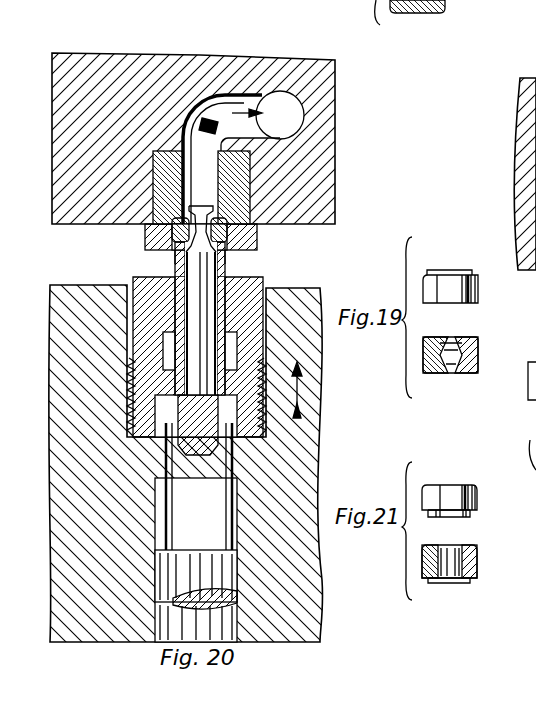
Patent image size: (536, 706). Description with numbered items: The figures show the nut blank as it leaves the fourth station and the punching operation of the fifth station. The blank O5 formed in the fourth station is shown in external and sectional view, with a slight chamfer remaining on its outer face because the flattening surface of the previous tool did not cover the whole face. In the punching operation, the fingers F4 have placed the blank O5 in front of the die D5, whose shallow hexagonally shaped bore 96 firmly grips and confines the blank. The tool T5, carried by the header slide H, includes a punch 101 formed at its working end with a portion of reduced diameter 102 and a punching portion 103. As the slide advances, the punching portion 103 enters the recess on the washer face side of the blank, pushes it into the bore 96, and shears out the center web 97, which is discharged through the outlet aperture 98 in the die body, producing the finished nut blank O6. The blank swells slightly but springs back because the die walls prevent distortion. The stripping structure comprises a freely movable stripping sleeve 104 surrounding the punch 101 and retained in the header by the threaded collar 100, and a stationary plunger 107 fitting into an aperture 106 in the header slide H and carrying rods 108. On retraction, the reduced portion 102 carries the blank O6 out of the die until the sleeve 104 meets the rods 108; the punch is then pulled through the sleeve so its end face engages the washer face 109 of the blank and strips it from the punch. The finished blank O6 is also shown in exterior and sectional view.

In FIG. 20, the header slide H is at (300, 454).
In FIG. 20, the center web 97 is at (190, 119).
In FIG. 20, the outlet aperture 98 is at (241, 95).
In FIG. 20, the hexagonally shaped bore 96 is at (160, 178).
In FIG. 20, the die D5 is at (240, 174).
In FIG. 20, the fingers F4 is at (257, 241).
In FIG. 20, the finished nut blank O6 is at (228, 221).
In FIG. 21, the finished nut blank O6 is at (477, 503).
In FIG. 20, the punch 101 is at (205, 284).
In FIG. 20, the portion of reduced diameter 102 is at (190, 276).
In FIG. 20, the tool T5 is at (176, 257).
In FIG. 20, the punching portion 103 is at (197, 207).
In FIG. 20, the threaded collar 100 is at (250, 308).
In FIG. 20, the stripping sleeve 104 is at (128, 383).
In FIG. 20, the aperture 106 is at (180, 536).
In FIG. 20, the rods 108 is at (222, 488).
In FIG. 20, the stationary plunger 107 is at (177, 578).
In FIG. 19, the blank O5 is at (480, 350).
In FIG. 21, the washer face 109 is at (437, 518).